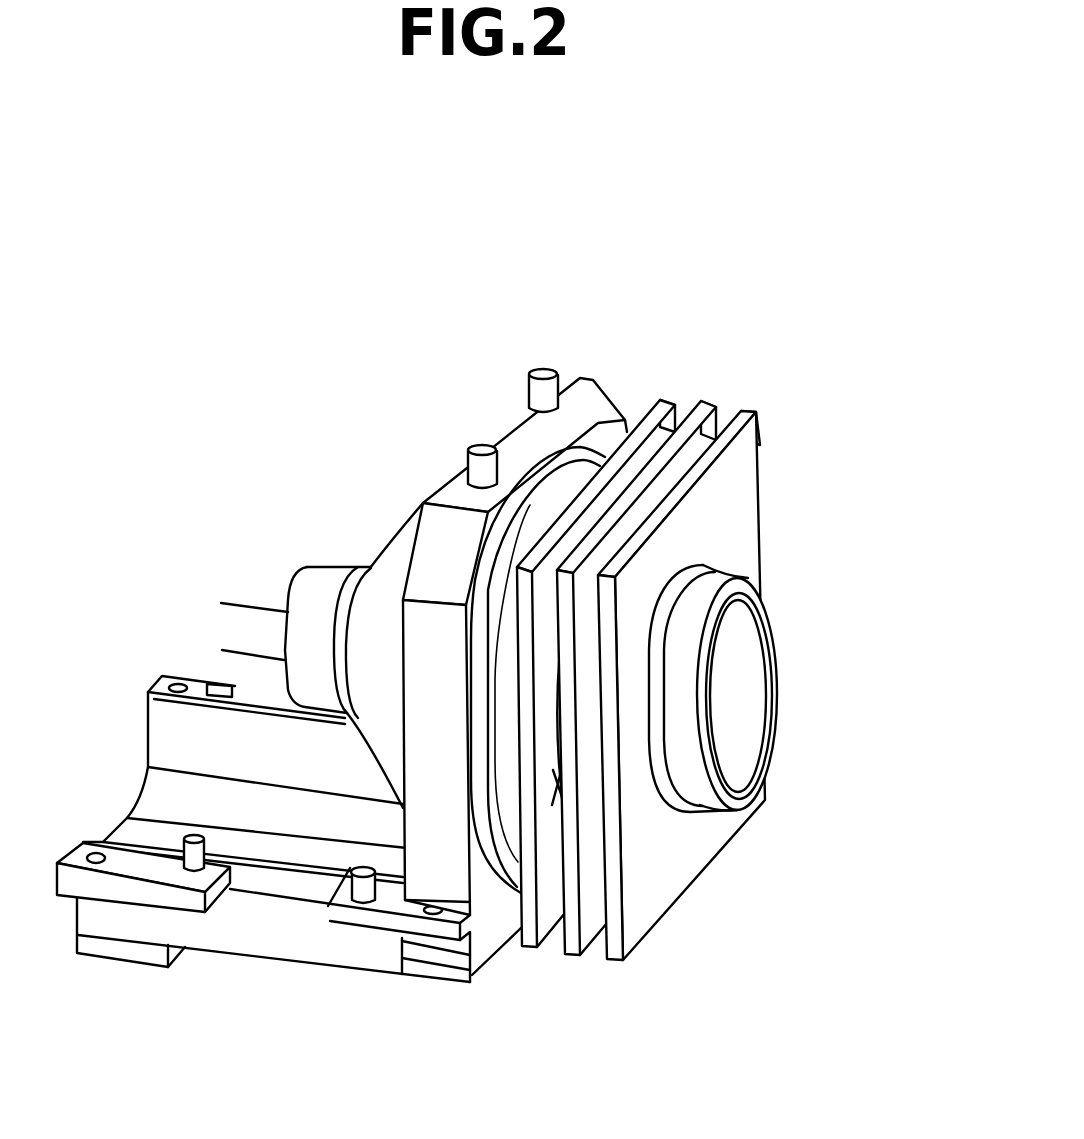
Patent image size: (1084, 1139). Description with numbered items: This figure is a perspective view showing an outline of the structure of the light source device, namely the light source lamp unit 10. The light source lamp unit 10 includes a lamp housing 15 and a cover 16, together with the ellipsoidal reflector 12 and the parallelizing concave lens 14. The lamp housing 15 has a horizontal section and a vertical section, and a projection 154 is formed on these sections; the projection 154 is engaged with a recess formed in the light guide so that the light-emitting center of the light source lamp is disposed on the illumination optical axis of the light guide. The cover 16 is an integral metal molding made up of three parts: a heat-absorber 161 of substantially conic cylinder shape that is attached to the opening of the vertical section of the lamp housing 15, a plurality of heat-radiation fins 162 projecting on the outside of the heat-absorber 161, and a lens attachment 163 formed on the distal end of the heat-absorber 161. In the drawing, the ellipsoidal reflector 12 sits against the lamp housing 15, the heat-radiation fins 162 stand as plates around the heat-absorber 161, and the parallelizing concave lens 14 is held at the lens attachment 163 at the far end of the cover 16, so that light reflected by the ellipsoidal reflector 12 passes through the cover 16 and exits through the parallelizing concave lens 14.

The light source lamp unit 10 is at (630, 297).
The ellipsoidal reflector 12 is at (404, 527).
The parallelizing concave lens 14 is at (762, 657).
The lamp housing 15 is at (307, 958).
The cover 16 is at (750, 542).
The projection 154 is at (543, 372).
The heat-absorber 161 is at (556, 922).
The heat-radiation fins 162 is at (660, 400).
The lens attachment 163 is at (733, 798).